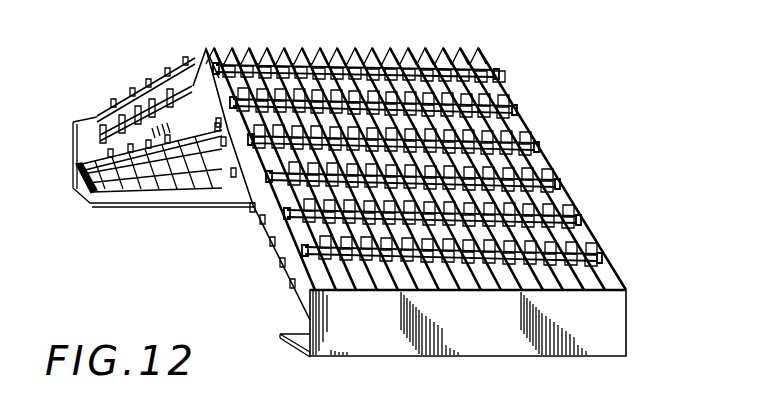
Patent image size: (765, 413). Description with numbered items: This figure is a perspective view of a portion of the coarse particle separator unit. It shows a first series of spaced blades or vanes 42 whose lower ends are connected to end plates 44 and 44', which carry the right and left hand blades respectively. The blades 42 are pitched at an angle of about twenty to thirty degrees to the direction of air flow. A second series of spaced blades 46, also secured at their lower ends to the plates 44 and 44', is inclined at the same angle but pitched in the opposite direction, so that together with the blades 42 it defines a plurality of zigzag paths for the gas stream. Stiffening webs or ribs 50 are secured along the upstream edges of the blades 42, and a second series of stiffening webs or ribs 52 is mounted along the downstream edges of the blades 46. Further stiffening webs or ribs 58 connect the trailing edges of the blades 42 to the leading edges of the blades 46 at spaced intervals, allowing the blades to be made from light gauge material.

The first series of spaced blades or vanes 42 is at (78, 168).
The end plate 44 is at (453, 323).
The end plate 44' is at (55, 184).
The second series of spaced blades 46 is at (175, 76).
The stiffening webs or ribs 50 is at (108, 203).
The second series of stiffening webs or ribs 52 is at (133, 92).
The stiffening webs or ribs 58 is at (112, 140).